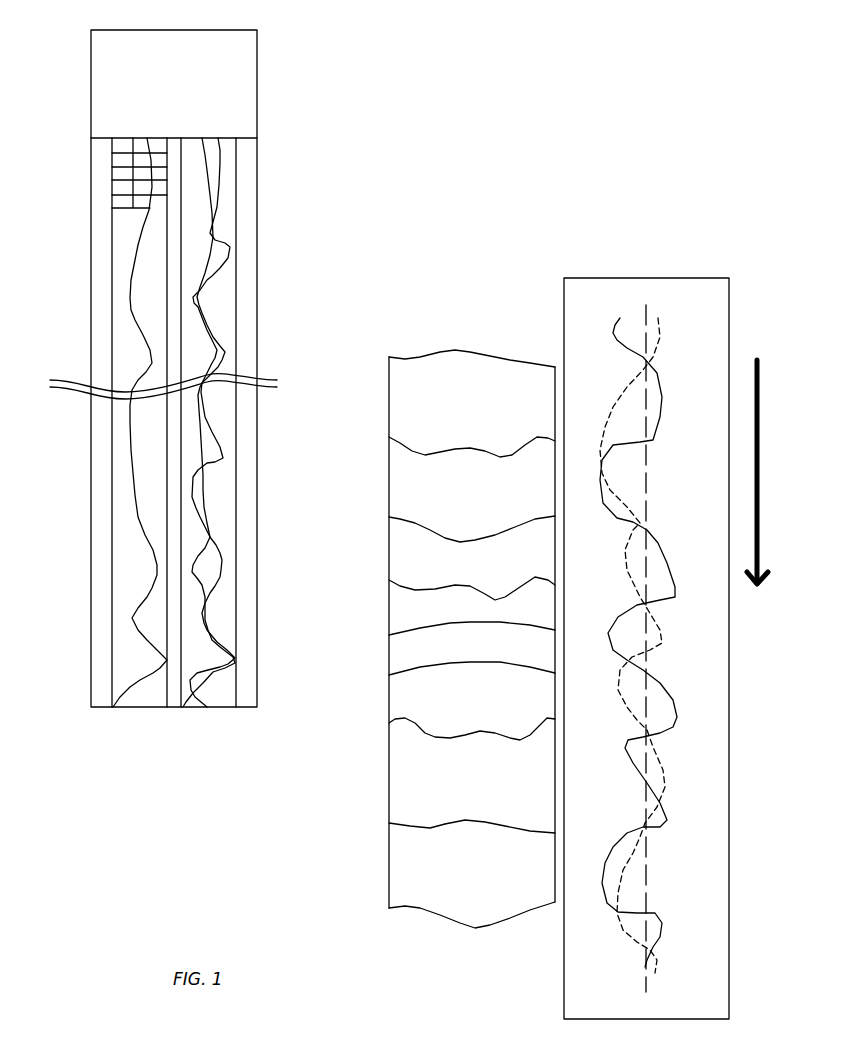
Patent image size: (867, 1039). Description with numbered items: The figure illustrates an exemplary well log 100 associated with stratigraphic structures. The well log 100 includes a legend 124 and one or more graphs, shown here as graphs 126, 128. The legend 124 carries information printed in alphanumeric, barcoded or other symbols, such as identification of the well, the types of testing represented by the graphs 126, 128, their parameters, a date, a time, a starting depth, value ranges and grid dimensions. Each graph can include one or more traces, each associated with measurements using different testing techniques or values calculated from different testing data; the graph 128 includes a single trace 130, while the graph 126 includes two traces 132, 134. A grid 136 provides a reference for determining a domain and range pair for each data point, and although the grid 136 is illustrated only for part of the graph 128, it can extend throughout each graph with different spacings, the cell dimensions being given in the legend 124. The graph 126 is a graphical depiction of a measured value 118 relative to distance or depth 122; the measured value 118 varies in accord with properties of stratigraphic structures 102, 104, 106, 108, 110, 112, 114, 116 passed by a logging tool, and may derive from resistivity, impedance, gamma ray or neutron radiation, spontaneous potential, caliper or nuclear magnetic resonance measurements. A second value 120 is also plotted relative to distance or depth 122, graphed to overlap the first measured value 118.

The well log 100 is at (275, 51).
The stratigraphic structure 102 is at (389, 402).
The stratigraphic structure 104 is at (389, 485).
The stratigraphic structure 106 is at (389, 550).
The stratigraphic structure 108 is at (389, 607).
The stratigraphic structure 110 is at (389, 650).
The stratigraphic structure 112 is at (389, 705).
The stratigraphic structure 114 is at (389, 773).
The stratigraphic structure 116 is at (389, 867).
The measured value 118 is at (613, 334).
The second value 120 is at (662, 337).
The distance or depth 122 is at (757, 500).
The legend 124 is at (257, 102).
The graph 126 is at (237, 255).
The graph 128 is at (112, 265).
The trace 130 is at (150, 212).
The trace 132 is at (220, 163).
The trace 134 is at (210, 200).
The grid 136 is at (120, 168).